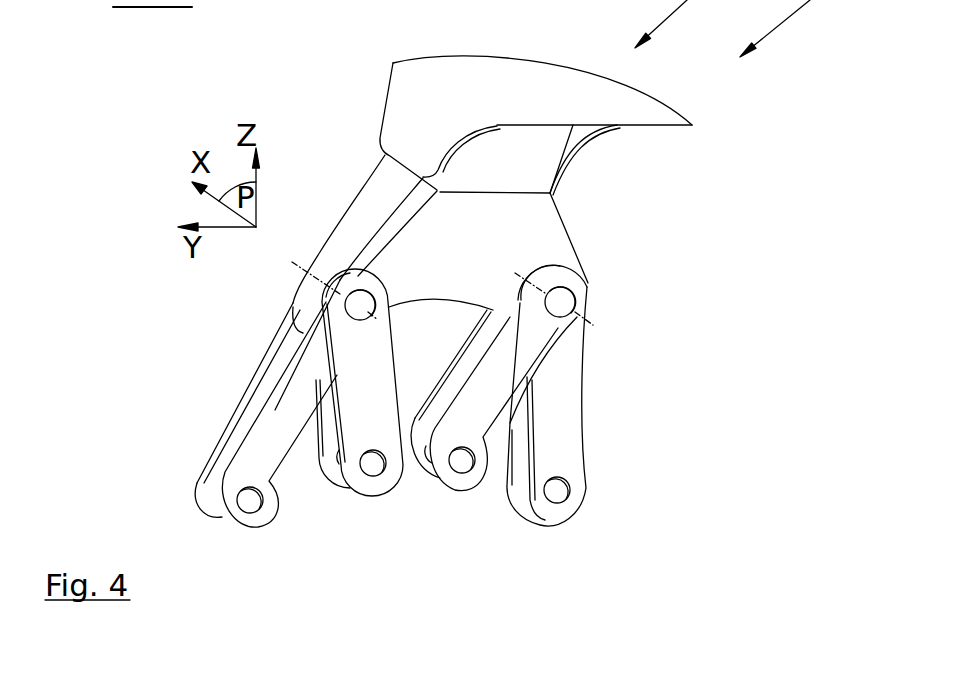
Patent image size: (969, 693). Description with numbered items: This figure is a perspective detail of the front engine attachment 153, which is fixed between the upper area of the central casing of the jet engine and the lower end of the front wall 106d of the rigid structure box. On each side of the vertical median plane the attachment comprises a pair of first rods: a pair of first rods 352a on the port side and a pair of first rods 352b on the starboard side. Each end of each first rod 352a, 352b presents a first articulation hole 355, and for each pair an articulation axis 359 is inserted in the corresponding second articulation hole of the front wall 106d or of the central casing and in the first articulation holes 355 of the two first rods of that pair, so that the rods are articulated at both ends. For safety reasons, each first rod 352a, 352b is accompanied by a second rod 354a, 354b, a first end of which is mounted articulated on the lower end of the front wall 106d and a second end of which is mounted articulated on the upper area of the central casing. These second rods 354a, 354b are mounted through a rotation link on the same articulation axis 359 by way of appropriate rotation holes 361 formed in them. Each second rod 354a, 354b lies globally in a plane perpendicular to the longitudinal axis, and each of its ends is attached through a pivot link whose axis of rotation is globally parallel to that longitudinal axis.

The front wall 106d is at (530, 162).
The front engine attachment 153 is at (650, 288).
The first articulation hole 355 is at (345, 296).
The articulation axis 359 is at (567, 293).
The rotation hole 361 is at (557, 490).
The first rod 352a is at (377, 483).
The first rod 352b is at (327, 422).
The second rod 354a is at (267, 507).
The second rod 354b is at (230, 452).